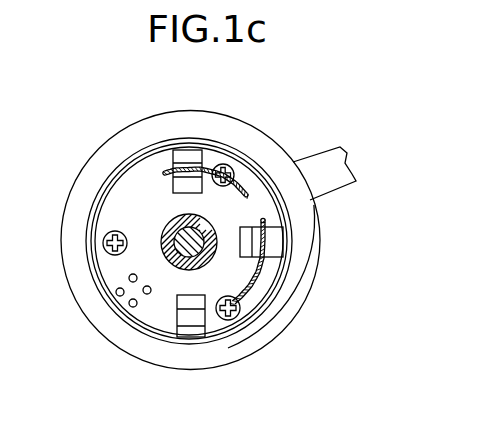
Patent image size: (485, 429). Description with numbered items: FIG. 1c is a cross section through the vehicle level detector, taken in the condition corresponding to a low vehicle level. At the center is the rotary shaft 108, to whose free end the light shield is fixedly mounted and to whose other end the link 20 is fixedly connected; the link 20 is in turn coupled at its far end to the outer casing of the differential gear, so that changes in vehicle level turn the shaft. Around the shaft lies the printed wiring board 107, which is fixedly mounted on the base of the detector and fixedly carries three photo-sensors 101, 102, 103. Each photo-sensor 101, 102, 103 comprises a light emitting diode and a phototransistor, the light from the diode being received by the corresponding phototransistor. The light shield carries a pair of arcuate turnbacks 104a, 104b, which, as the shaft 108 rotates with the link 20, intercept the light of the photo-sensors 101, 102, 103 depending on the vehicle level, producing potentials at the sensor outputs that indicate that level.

The link 20 is at (330, 197).
The photo-sensor 101 is at (212, 336).
The photo-sensor 102 is at (283, 243).
The photo-sensor 103 is at (194, 150).
The turnback 104a is at (250, 168).
The turnback 104b is at (257, 284).
The printed wiring board 107 is at (148, 316).
The rotary shaft 108 is at (169, 226).